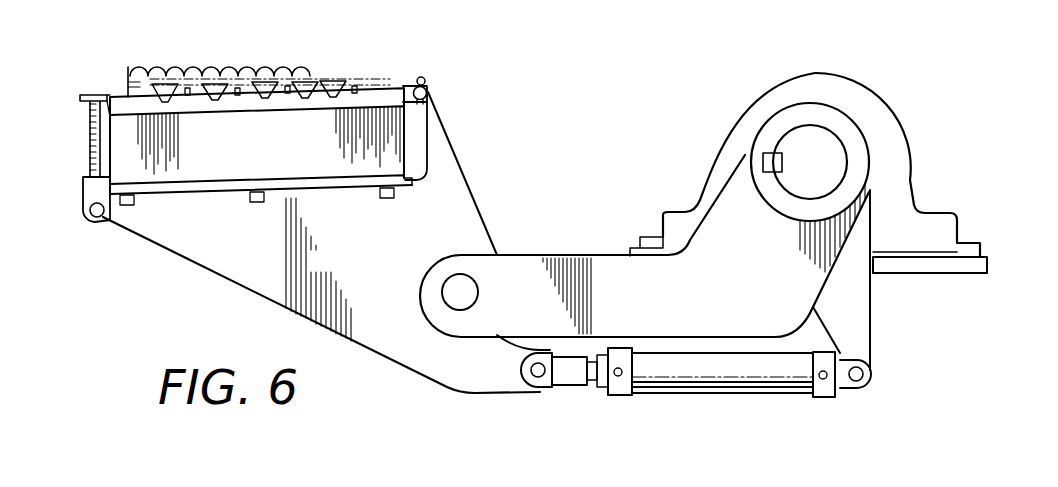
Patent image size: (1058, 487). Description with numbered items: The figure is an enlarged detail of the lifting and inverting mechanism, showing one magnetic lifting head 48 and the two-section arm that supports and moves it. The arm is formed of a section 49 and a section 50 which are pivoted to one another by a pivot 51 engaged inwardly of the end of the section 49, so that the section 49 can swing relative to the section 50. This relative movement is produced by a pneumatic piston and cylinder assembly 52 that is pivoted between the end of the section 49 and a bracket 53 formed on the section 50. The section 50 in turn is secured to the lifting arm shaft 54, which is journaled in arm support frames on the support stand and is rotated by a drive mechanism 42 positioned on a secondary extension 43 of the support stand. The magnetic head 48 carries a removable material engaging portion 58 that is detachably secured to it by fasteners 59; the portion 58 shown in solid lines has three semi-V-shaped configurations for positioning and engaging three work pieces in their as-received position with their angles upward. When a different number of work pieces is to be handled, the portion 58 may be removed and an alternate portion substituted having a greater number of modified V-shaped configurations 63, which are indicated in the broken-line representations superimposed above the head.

The drive mechanism 42 is at (847, 92).
The secondary extension 43 is at (953, 267).
The magnetic lifting head 48 is at (261, 146).
The arm section 49 is at (326, 242).
The arm section 50 is at (644, 246).
The pivot 51 is at (465, 300).
The pneumatic piston and cylinder assembly 52 is at (720, 383).
The bracket 53 is at (860, 317).
The lifting arm shaft 54 is at (805, 162).
The material engaging portion 58 is at (388, 92).
The fastener 59 is at (88, 113).
The modified V-shaped configuration 63 is at (150, 88).